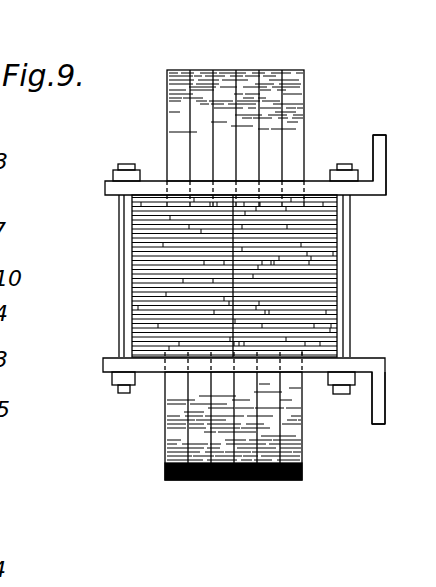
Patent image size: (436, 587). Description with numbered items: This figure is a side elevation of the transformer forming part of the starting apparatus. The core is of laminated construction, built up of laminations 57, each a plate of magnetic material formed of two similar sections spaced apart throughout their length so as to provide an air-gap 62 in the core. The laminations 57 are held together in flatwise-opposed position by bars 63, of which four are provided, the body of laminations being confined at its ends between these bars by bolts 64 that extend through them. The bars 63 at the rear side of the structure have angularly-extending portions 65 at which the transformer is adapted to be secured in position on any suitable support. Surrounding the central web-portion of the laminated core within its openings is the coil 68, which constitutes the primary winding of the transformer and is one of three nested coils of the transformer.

The laminations 57 is at (144, 251).
The air-gap 62 is at (233, 213).
The bars 63 is at (151, 186).
The bolts 64 is at (123, 313).
The angularly-extending portions 65 is at (378, 148).
The coil 68 is at (305, 78).